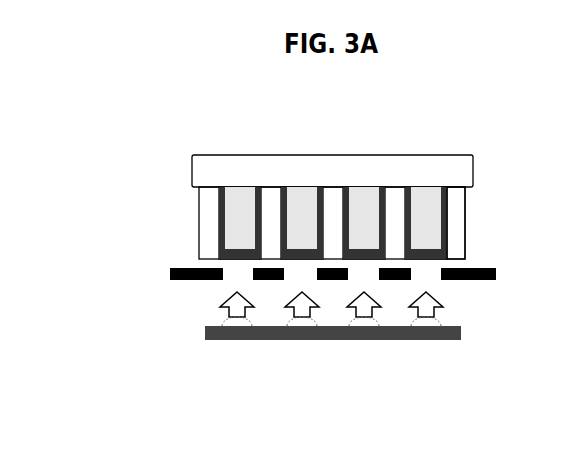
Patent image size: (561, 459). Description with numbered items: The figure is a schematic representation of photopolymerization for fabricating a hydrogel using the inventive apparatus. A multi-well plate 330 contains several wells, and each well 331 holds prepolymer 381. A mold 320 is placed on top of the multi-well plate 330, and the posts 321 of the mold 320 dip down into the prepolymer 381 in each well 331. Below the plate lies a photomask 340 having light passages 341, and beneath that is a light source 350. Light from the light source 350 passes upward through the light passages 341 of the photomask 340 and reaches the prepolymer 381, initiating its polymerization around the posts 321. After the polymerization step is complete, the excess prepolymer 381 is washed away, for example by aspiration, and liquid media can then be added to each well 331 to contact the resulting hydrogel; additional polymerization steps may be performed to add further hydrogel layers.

The mold 320 is at (302, 150).
The multi-well plate 330 is at (208, 211).
The well 331 is at (445, 200).
The post 321 is at (427, 235).
The prepolymer 381 is at (219, 254).
The photomask 340 is at (172, 273).
The light passage 341 is at (239, 281).
The light source 350 is at (332, 340).